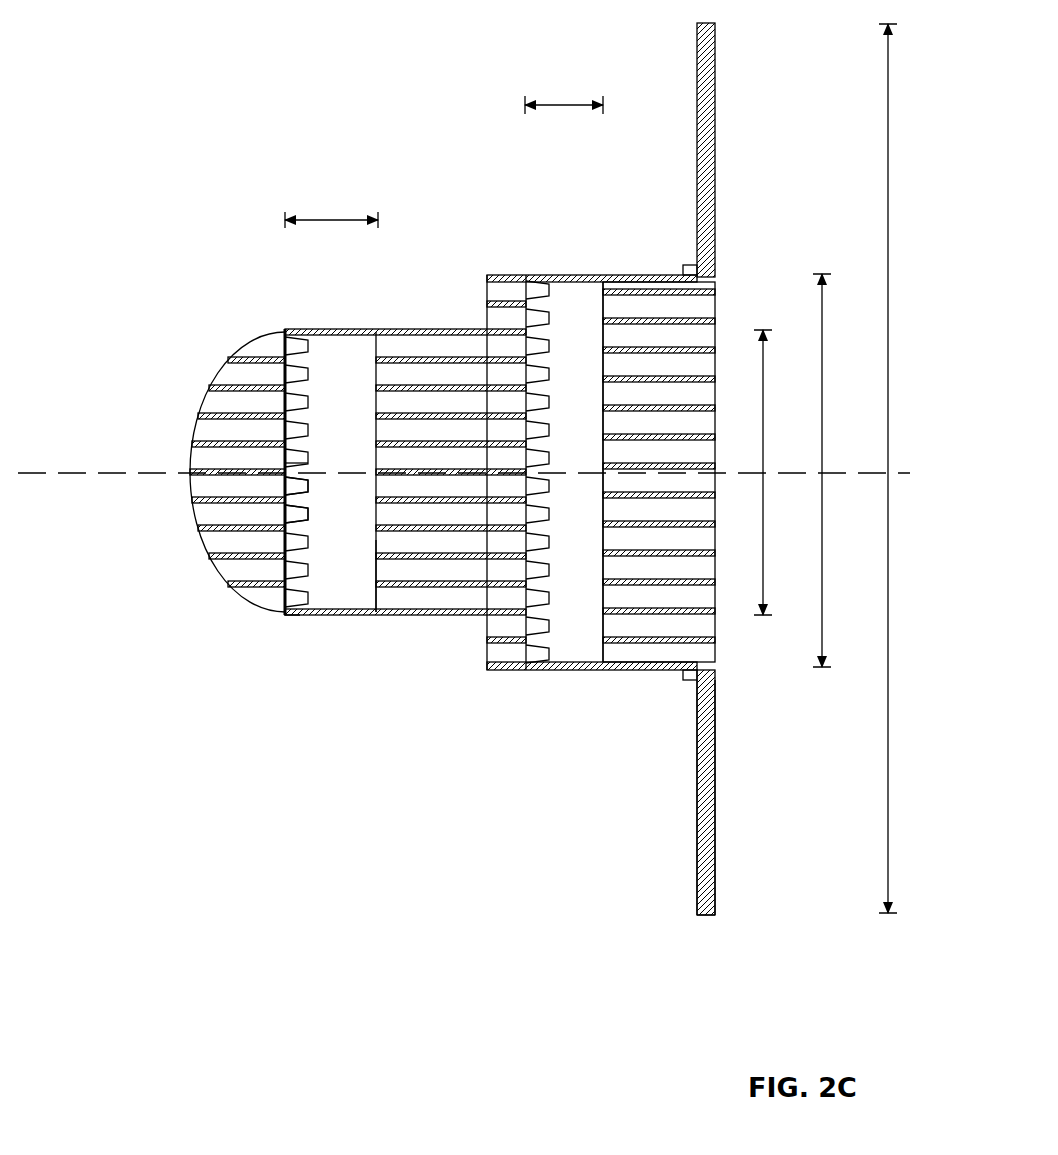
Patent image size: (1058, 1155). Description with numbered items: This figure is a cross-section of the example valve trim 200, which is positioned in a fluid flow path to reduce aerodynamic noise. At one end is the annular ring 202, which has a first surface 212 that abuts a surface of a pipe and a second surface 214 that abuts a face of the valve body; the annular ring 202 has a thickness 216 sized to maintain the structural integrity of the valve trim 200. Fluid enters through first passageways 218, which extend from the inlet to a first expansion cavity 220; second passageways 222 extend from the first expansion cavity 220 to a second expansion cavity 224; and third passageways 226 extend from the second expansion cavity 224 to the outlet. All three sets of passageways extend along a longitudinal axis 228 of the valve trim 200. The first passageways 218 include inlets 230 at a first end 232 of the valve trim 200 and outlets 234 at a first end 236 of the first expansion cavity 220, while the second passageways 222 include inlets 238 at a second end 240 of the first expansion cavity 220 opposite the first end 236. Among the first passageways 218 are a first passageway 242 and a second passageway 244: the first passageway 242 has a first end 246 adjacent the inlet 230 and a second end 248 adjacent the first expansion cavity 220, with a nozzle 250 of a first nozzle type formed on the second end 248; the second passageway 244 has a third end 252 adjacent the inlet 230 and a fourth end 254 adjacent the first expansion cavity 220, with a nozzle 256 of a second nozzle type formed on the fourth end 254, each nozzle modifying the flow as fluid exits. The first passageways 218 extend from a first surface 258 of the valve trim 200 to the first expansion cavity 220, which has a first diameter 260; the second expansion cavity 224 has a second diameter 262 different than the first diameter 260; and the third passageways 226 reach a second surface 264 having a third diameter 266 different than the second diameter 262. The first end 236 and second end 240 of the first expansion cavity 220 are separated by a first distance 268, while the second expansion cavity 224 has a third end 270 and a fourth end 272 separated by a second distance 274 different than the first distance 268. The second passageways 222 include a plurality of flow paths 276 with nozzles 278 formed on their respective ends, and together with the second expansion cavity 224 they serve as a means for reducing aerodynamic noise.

The valve trim 200 is at (185, 38).
The annular ring 202 is at (709, 489).
The first surface 212 is at (717, 850).
The second surface 214 is at (698, 835).
The thickness 216 is at (705, 916).
The first passageways 218 is at (178, 435).
The first expansion cavity 220 is at (289, 477).
The second passageways 222 is at (405, 450).
The second expansion cavity 224 is at (601, 424).
The third passageways 226 is at (659, 451).
The longitudinal axis 228 is at (70, 473).
The inlets 230 is at (203, 400).
The first end 232 is at (195, 517).
The outlets 234 is at (306, 412).
The first end 236 is at (286, 614).
The inlets 238 is at (378, 570).
The second end 240 is at (380, 612).
The first passageway 242 is at (195, 450).
The second passageway 244 is at (187, 490).
The first end 246 is at (192, 465).
The second end 248 is at (300, 463).
The nozzle 250 is at (295, 450).
The third end 252 is at (192, 492).
The fourth end 254 is at (305, 488).
The nozzle 256 is at (312, 492).
The first surface 258 is at (190, 443).
The first diameter 260 is at (763, 408).
The second diameter 262 is at (822, 345).
The second surface 264 is at (713, 68).
The third diameter 266 is at (888, 85).
The first distance 268 is at (328, 218).
The third end 270 is at (530, 672).
The fourth end 272 is at (606, 672).
The second distance 274 is at (558, 102).
The flow paths 276 is at (508, 290).
The nozzles 278 is at (533, 290).